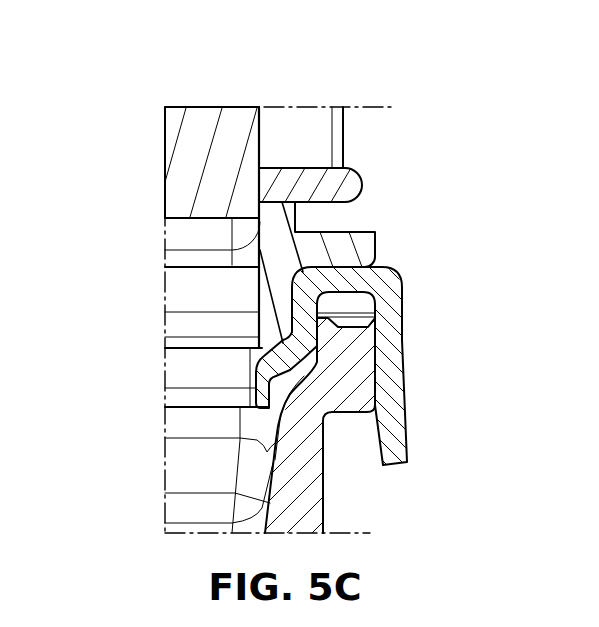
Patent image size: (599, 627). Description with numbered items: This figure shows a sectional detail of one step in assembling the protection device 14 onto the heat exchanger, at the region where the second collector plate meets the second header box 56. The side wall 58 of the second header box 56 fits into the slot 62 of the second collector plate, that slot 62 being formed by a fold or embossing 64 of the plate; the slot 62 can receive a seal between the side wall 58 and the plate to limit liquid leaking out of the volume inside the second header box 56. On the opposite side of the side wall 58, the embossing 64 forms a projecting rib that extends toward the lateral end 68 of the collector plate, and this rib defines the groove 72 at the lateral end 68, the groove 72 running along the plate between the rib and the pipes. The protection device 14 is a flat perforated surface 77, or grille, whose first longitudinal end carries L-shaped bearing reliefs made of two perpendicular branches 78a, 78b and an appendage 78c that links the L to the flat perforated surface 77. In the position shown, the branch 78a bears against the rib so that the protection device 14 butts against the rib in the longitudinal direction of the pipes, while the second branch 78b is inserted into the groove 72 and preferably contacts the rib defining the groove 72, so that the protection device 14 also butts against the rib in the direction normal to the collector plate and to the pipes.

The protection device 14 is at (279, 113).
The flat perforated surface 77 is at (318, 132).
The branch 78a is at (345, 248).
The second branch 78b is at (270, 322).
The appendage 78c is at (277, 222).
The embossing 64 is at (345, 278).
The slot 62 is at (343, 316).
The lateral end 68 is at (404, 390).
The side wall 58 is at (347, 388).
The second header box 56 is at (298, 483).
The groove 72 is at (260, 360).